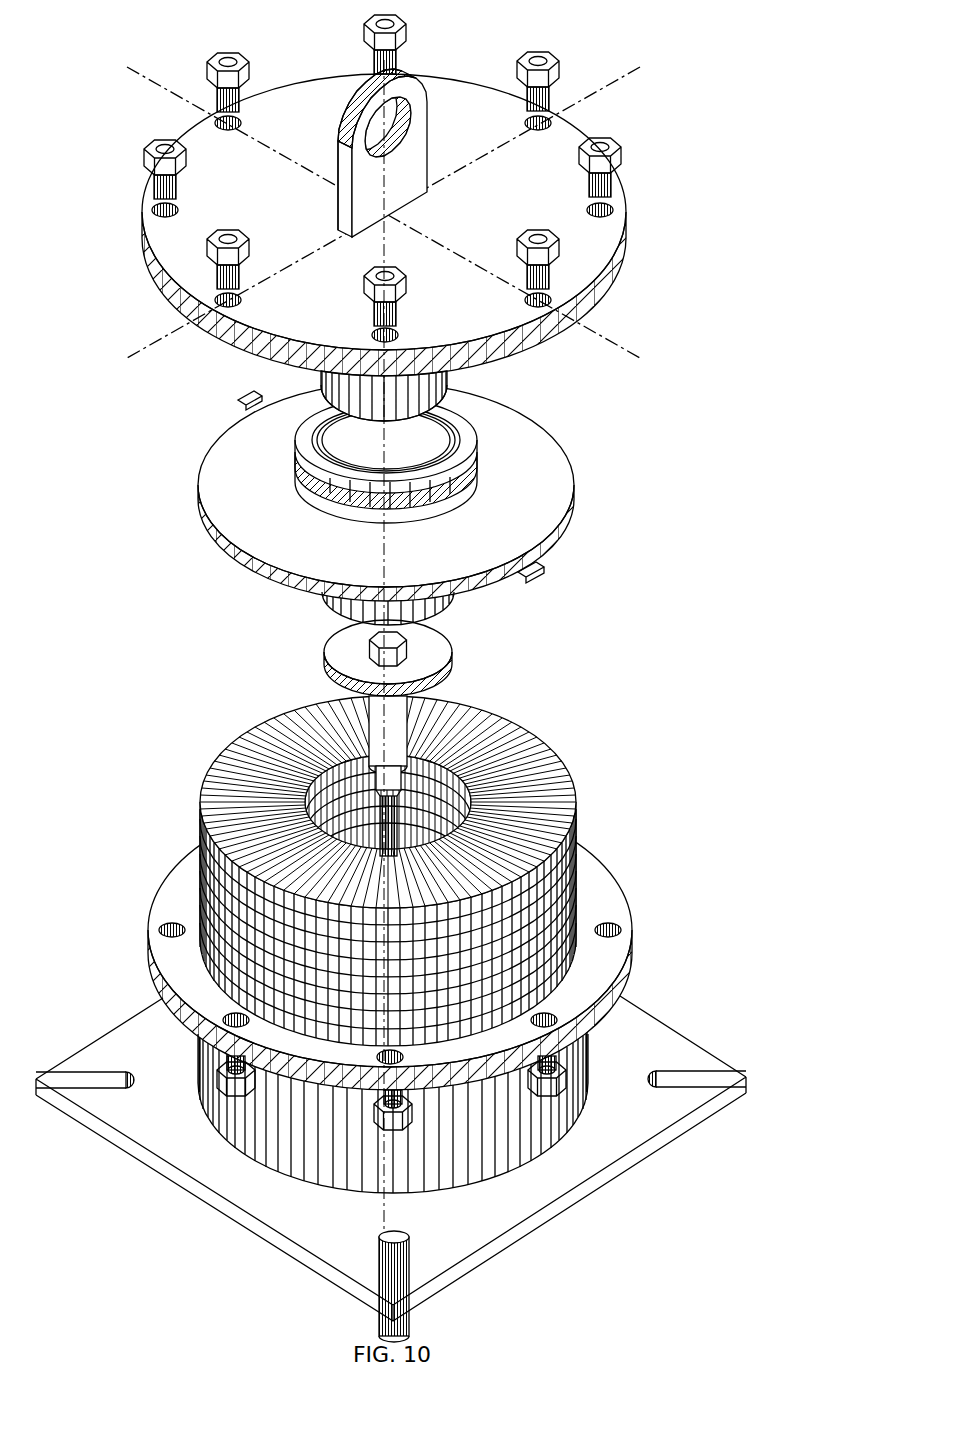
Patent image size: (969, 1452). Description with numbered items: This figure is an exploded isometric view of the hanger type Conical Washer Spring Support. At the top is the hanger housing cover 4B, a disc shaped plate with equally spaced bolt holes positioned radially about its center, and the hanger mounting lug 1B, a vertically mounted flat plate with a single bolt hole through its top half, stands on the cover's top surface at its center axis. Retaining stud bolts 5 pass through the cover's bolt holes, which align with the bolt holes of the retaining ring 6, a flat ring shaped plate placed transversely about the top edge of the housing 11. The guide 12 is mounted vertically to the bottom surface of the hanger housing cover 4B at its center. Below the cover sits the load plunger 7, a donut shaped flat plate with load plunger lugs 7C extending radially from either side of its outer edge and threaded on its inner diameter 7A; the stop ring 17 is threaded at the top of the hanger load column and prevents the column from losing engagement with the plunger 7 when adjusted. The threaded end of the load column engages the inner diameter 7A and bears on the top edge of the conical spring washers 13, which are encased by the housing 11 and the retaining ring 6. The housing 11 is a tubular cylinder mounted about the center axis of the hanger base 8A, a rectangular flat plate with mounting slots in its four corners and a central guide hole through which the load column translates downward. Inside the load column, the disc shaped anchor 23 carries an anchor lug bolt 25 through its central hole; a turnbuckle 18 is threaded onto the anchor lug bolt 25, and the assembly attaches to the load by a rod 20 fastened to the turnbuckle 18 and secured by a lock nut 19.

The hanger mounting lug 1B is at (397, 70).
The retaining stud bolts 5 is at (550, 53).
The hanger housing cover 4B is at (585, 127).
The guide 12 is at (450, 373).
The load plunger lug 7C is at (247, 398).
The stop ring 17 is at (473, 427).
The load plunger 7 is at (570, 457).
The load plunger threaded inner diameter 7A is at (317, 493).
The anchor lug bolt 25 is at (407, 643).
The anchor 23 is at (323, 660).
The turnbuckle 18 is at (415, 700).
The lock nut 19 is at (505, 727).
The conical spring washer 13 is at (203, 783).
The retaining ring 6 is at (150, 929).
The housing 11 is at (199, 1047).
The hanger base 8A is at (690, 1034).
The rod 20 is at (407, 1318).